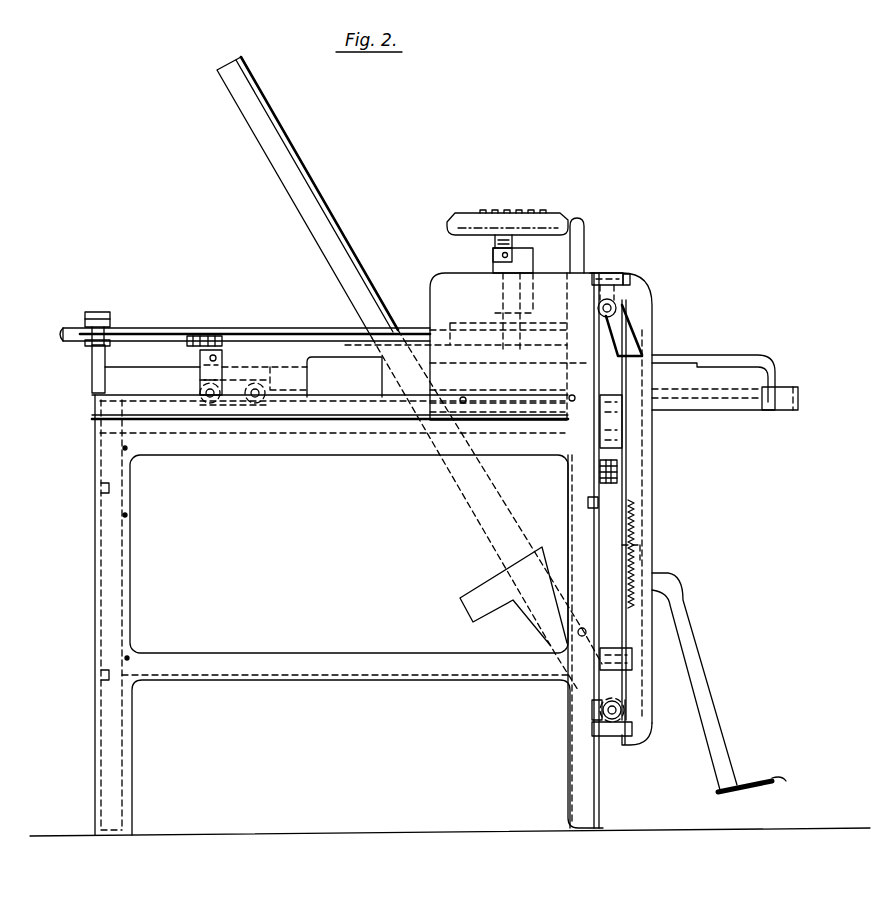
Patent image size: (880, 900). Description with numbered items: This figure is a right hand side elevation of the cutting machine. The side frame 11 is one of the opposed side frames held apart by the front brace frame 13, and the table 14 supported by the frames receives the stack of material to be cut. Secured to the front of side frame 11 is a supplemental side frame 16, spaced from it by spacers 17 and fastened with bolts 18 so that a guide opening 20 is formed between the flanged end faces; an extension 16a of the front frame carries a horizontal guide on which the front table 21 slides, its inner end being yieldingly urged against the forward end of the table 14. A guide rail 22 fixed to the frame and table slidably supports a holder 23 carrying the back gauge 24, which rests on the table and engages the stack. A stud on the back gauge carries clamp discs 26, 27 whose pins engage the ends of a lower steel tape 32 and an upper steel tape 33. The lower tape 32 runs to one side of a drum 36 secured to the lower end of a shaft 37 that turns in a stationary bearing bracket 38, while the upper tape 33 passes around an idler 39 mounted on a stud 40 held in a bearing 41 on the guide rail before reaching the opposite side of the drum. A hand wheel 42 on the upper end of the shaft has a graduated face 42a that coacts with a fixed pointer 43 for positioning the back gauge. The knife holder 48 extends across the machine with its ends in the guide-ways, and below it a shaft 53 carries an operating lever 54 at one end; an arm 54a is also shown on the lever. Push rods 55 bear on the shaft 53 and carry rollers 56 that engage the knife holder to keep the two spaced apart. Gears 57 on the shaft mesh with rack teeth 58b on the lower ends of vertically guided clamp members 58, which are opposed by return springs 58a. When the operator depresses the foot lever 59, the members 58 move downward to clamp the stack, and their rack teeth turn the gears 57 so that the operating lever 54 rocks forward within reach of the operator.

The side frame 11 is at (587, 826).
The front brace frame 13 is at (372, 451).
The table 14 is at (333, 403).
The supplemental side frame 16 is at (653, 298).
The extension 16a is at (783, 327).
The spacer 17 is at (607, 272).
The bolt 18 is at (629, 276).
The guide opening 20 is at (610, 367).
The front table 21 is at (785, 412).
The guide rail 22 is at (128, 375).
The holder 23 is at (227, 421).
The back gauge 24 is at (308, 364).
The clamp disc 26 is at (200, 347).
The clamp disc 27 is at (232, 326).
The lower steel tape 32 is at (365, 344).
The upper steel tape 33 is at (268, 331).
The drum 36 is at (463, 324).
The shaft 37 is at (503, 267).
The bearing bracket 38 is at (534, 256).
The idler 39 is at (70, 343).
The stud 40 is at (108, 323).
The bearing 41 is at (93, 384).
The hand wheel 42 is at (468, 238).
The face 42a is at (453, 222).
The fixed pointer 43 is at (588, 234).
The knife holder 48 is at (640, 431).
The shaft 53 is at (600, 710).
The operating lever 54 is at (263, 139).
The arm bracket 54a is at (461, 598).
The push rod 55 is at (610, 537).
The roller 56 is at (617, 482).
The gear 57 is at (605, 727).
The vertically guided member 58 is at (637, 462).
The return spring 58a is at (622, 552).
The rack teeth 58b is at (630, 735).
The foot lever 59 is at (720, 696).